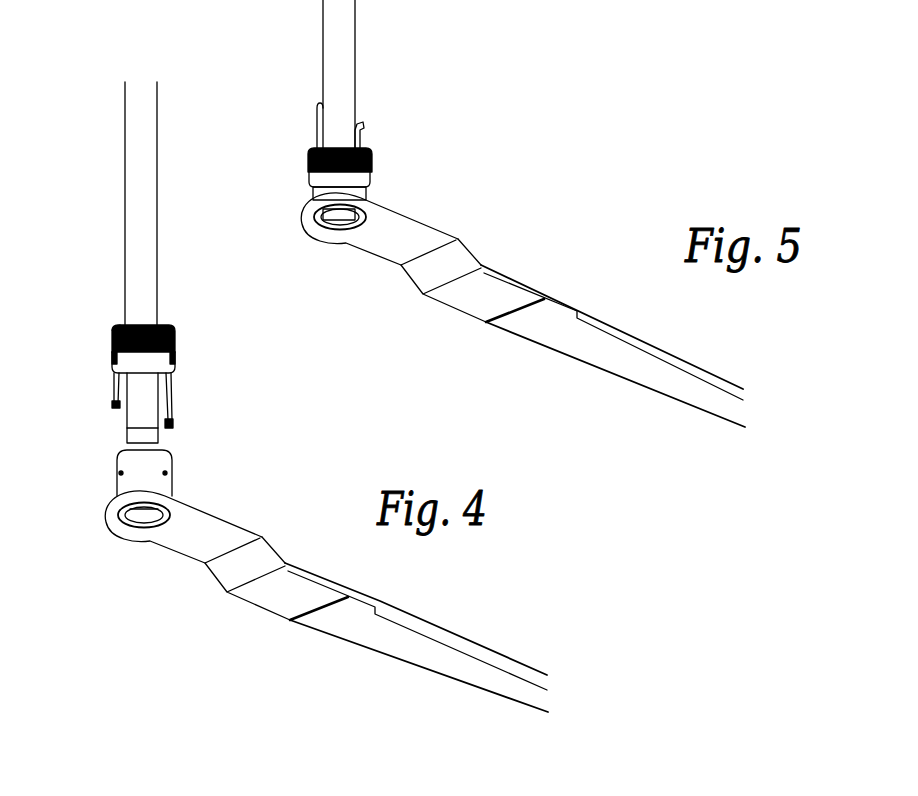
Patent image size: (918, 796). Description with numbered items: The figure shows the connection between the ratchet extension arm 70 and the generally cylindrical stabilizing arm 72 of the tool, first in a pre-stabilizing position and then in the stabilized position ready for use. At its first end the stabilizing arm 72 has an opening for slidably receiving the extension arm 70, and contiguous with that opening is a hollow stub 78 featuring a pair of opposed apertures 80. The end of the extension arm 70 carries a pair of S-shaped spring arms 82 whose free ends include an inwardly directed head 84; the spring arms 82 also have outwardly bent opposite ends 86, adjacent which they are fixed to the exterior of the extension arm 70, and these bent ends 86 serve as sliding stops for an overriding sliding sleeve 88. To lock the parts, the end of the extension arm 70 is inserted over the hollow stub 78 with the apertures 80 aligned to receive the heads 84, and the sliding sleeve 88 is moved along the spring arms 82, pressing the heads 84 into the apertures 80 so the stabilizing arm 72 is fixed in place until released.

In FIG. 4, the ratchet extension arm 70 is at (158, 182).
In FIG. 5, the ratchet extension arm 70 is at (353, 38).
In FIG. 4, the stabilizing arm 72 is at (242, 523).
In FIG. 5, the stabilizing arm 72 is at (470, 253).
In FIG. 4, the hollow stub 78 is at (172, 488).
In FIG. 4, the opposed apertures 80 is at (165, 472).
In FIG. 4, the S-shaped spring arms 82 is at (170, 397).
In FIG. 4, the inwardly directed head 84 is at (118, 406).
In FIG. 4, the outwardly bent opposite ends 86 is at (116, 326).
In FIG. 5, the outwardly bent opposite ends 86 is at (314, 107).
In FIG. 4, the overriding sliding sleeve 88 is at (177, 342).
In FIG. 5, the overriding sliding sleeve 88 is at (371, 165).